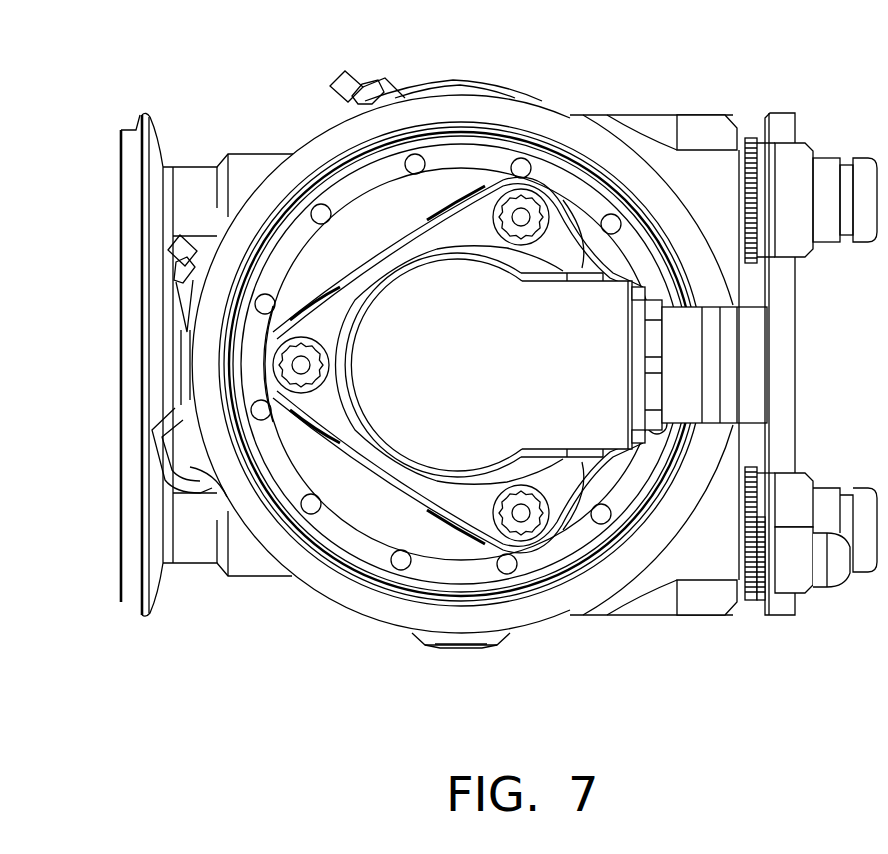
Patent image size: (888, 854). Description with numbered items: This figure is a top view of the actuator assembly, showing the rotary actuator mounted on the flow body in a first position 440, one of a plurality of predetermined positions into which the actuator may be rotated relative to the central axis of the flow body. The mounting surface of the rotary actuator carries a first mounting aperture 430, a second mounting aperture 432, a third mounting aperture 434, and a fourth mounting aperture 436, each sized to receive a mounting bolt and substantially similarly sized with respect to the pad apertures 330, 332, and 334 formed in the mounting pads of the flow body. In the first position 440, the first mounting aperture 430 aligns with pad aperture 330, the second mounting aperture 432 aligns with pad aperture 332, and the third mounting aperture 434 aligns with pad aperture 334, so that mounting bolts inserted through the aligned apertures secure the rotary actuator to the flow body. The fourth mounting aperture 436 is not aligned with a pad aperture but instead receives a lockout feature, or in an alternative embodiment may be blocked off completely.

The pad aperture 330 is at (163, 383).
The pad aperture 332 is at (428, 77).
The pad aperture 334 is at (762, 305).
The first mounting aperture 430 is at (148, 433).
The second mounting aperture 432 is at (485, 76).
The third mounting aperture 434 is at (757, 447).
The fourth mounting aperture 436 is at (470, 660).
The first position 440 is at (762, 55).